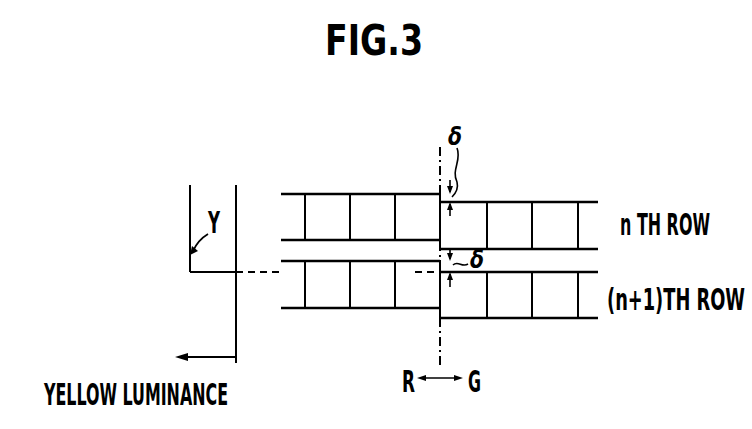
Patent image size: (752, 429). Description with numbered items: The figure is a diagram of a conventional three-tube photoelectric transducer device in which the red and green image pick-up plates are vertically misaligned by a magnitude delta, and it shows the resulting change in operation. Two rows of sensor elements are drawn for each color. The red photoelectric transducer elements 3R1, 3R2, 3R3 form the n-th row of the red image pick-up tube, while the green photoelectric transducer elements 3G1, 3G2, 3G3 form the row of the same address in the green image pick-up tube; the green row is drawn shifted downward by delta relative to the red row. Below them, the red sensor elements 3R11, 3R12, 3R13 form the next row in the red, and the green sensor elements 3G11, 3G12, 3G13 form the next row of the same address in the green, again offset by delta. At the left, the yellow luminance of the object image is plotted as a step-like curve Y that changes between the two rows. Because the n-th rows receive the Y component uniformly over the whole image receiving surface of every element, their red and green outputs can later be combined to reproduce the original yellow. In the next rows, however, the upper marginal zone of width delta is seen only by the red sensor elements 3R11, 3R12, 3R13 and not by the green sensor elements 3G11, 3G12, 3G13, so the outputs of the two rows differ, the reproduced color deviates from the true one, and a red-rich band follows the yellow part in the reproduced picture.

The red photoelectric transducer element 3R1 is at (326, 197).
The red photoelectric transducer element 3R2 is at (367, 197).
The red photoelectric transducer element 3R3 is at (414, 197).
The green photoelectric transducer element 3G1 is at (475, 205).
The green photoelectric transducer element 3G2 is at (512, 205).
The green photoelectric transducer element 3G3 is at (558, 205).
The red sensor element 3R11 is at (320, 310).
The red sensor element 3R12 is at (368, 310).
The red sensor element 3R13 is at (413, 310).
The green sensor element 3G11 is at (474, 319).
The green sensor element 3G12 is at (520, 319).
The green sensor element 3G13 is at (565, 319).